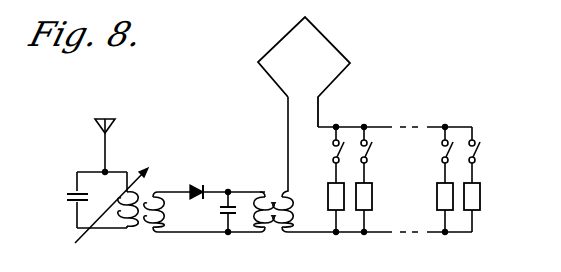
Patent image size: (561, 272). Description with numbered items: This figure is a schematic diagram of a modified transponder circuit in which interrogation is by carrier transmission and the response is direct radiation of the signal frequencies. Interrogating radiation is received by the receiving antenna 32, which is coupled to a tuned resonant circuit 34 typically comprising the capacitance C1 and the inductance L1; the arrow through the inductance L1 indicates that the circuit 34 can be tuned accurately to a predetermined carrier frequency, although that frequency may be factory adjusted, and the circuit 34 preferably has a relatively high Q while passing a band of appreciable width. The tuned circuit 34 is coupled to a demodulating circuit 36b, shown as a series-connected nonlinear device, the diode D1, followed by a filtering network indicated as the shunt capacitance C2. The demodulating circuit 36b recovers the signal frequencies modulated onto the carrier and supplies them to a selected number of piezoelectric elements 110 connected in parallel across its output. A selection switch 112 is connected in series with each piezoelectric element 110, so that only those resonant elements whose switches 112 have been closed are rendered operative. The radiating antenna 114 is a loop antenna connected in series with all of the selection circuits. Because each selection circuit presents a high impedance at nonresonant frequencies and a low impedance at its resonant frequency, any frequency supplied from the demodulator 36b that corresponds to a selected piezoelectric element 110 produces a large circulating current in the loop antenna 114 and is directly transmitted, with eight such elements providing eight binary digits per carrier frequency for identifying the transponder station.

The receiving antenna 32 is at (116, 123).
The tuned resonant circuit 34 is at (82, 155).
The capacitance C1 is at (70, 188).
The inductance L1 is at (111, 211).
The demodulating circuit 36b is at (229, 239).
The diode D1 is at (192, 185).
The shunt capacitance C2 is at (216, 212).
The loop antenna 114 is at (334, 45).
The selection switch 112 is at (373, 151).
The piezoelectric element 110 is at (437, 203).